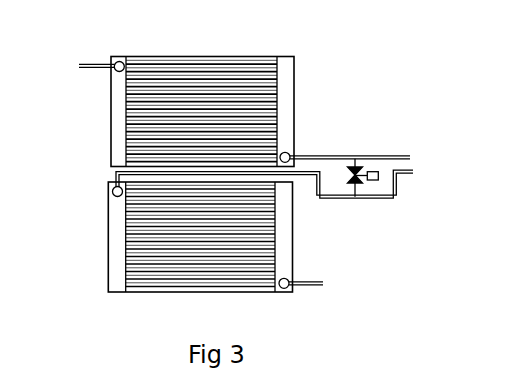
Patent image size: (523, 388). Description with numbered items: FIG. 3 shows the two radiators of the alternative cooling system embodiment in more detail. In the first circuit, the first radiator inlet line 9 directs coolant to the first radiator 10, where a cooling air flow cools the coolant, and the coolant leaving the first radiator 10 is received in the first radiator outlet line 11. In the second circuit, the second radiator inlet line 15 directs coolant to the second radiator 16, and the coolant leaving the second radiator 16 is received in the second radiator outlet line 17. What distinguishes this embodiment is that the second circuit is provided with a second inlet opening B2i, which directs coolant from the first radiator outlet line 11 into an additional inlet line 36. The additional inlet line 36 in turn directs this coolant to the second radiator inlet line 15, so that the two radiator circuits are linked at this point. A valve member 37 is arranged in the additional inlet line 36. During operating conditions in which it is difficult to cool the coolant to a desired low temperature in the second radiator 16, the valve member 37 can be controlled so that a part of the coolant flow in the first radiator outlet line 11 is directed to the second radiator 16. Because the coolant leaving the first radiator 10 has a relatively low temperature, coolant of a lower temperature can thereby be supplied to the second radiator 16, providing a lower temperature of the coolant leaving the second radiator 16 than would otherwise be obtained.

The first radiator inlet line 9 is at (103, 63).
The first radiator 10 is at (147, 125).
The first radiator outlet line 11 is at (311, 155).
The second radiator inlet line 15 is at (406, 174).
The second radiator 16 is at (143, 235).
The second radiator outlet line 17 is at (322, 278).
The additional inlet line 36 is at (360, 198).
The valve member 37 is at (356, 174).
The second inlet opening B2i is at (354, 160).